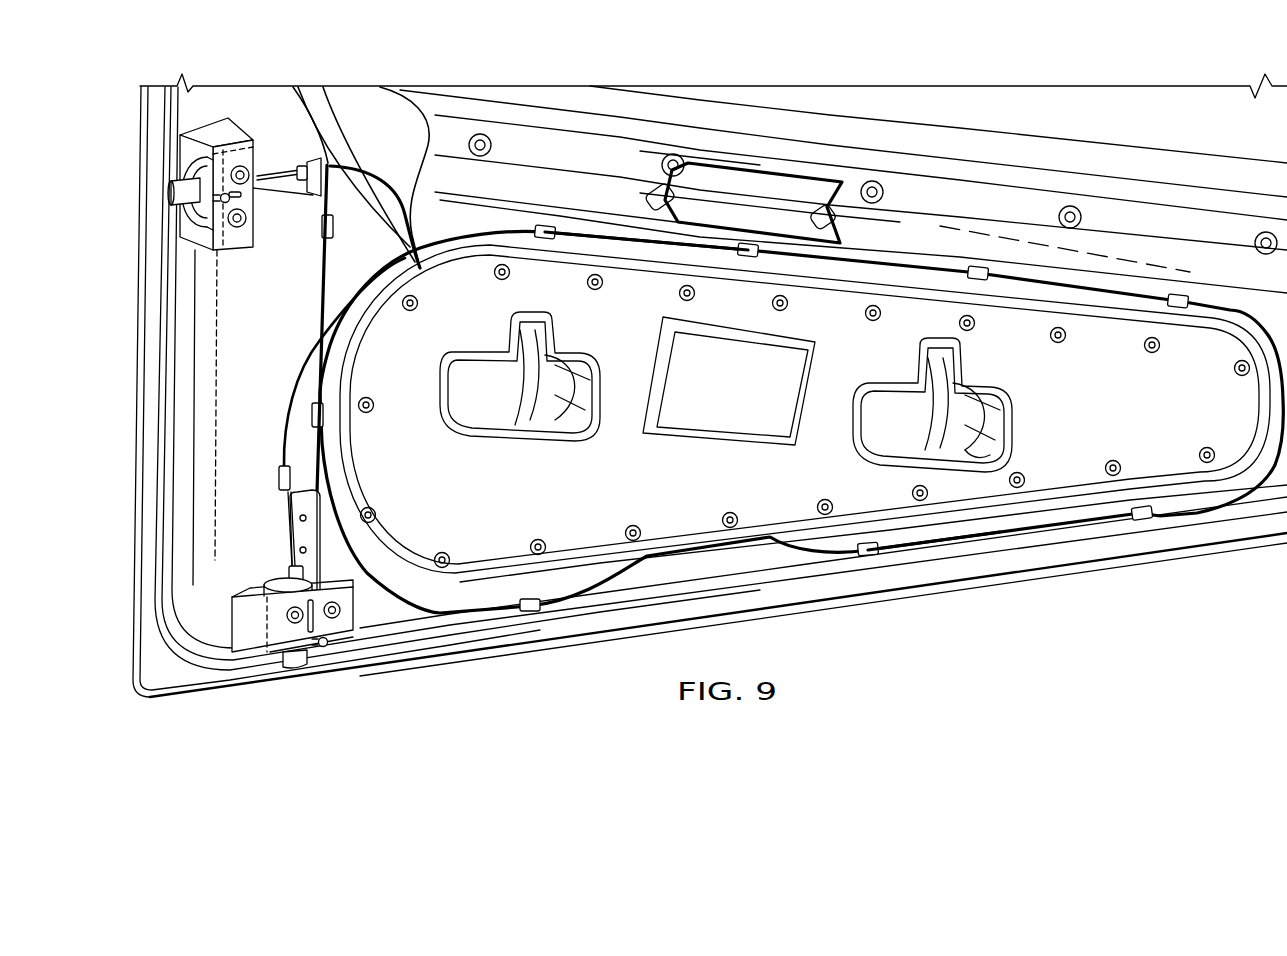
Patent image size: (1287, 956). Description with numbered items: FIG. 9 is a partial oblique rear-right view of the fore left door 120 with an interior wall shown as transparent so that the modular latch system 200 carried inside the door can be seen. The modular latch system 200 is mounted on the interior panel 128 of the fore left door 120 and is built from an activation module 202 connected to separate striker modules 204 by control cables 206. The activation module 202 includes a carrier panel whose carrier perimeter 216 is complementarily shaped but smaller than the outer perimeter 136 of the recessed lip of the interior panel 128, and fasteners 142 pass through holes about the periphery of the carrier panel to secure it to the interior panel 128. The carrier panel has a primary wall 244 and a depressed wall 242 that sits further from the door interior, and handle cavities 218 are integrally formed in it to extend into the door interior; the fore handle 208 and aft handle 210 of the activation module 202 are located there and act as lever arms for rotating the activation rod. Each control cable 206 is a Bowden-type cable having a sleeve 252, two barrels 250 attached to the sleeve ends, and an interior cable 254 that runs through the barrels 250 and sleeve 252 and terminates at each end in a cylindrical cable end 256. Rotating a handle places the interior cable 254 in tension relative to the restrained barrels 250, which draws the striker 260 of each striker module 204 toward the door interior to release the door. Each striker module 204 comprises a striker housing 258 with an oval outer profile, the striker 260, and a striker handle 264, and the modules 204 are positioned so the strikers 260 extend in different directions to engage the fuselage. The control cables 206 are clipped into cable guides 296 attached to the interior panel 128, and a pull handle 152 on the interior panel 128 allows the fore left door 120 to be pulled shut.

The fore left door 120 is at (142, 108).
The interior panel 128 is at (188, 293).
The outer perimeter 136 is at (633, 260).
The fasteners 142 is at (880, 322).
The pull handle 152 is at (777, 167).
The modular latch system 200 is at (1107, 303).
The activation module 202 is at (930, 287).
The striker module 204 is at (195, 150).
The control cable 206 is at (327, 117).
The fore handle 208 is at (975, 457).
The aft handle 210 is at (530, 395).
The carrier perimeter 216 is at (603, 257).
The handle cavity 218 is at (557, 380).
The depressed wall 242 is at (737, 417).
The primary wall 244 is at (1020, 327).
The barrel 250 is at (341, 182).
The sleeve 252 is at (383, 123).
The interior cable 254 is at (290, 170).
The cable end 256 is at (287, 577).
The striker housing 258 is at (190, 168).
The striker 260 is at (178, 195).
The striker handle 264 is at (222, 203).
The cable guide 296 is at (322, 228).